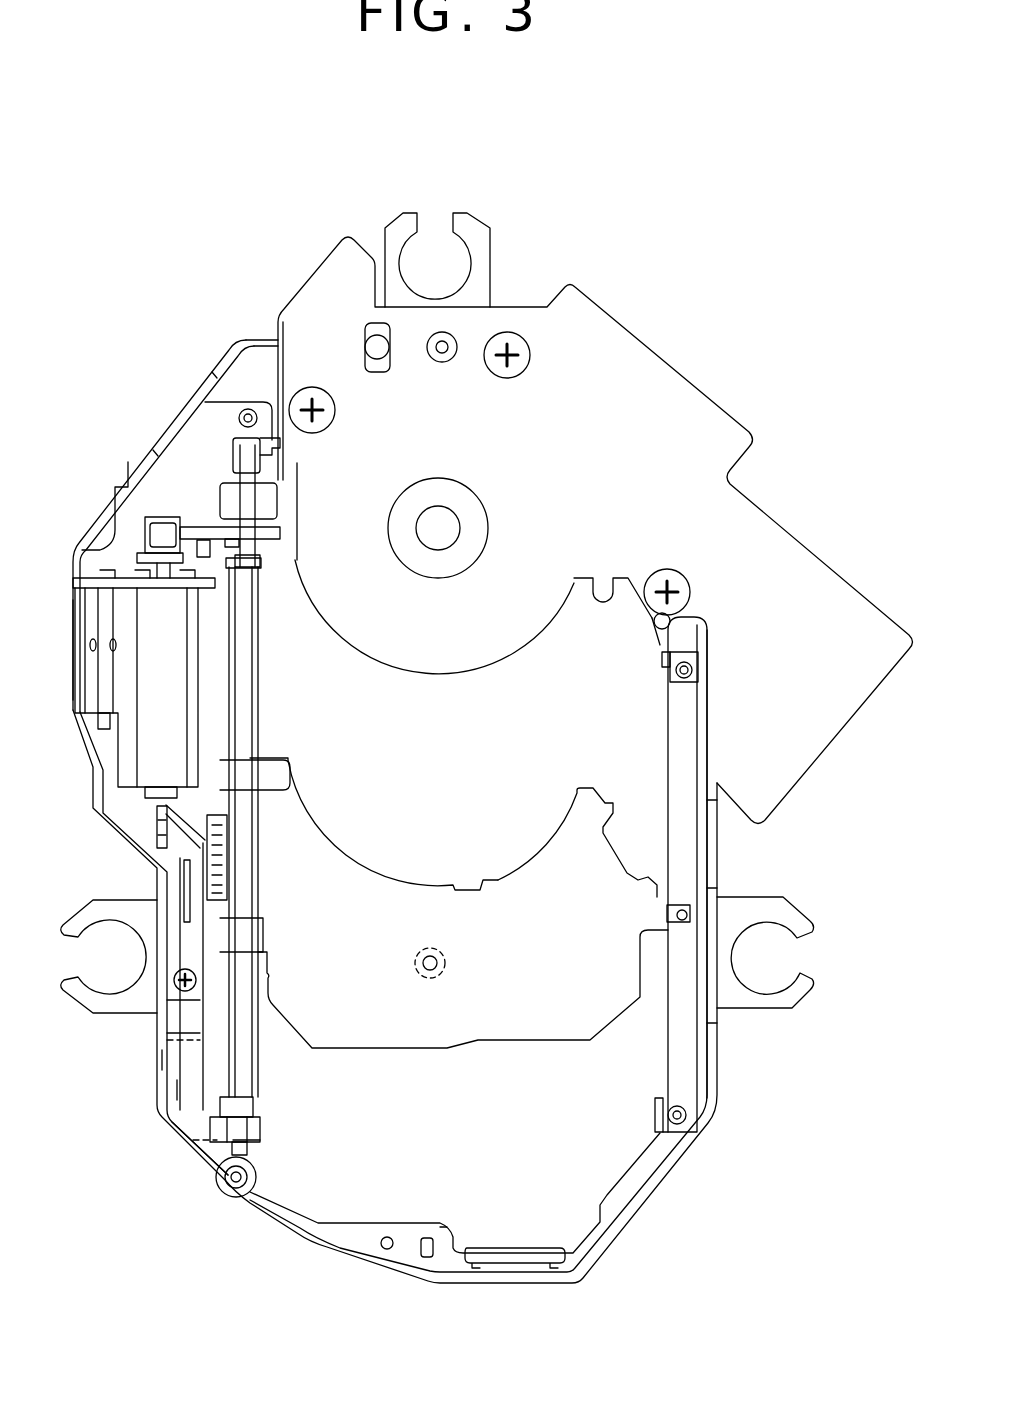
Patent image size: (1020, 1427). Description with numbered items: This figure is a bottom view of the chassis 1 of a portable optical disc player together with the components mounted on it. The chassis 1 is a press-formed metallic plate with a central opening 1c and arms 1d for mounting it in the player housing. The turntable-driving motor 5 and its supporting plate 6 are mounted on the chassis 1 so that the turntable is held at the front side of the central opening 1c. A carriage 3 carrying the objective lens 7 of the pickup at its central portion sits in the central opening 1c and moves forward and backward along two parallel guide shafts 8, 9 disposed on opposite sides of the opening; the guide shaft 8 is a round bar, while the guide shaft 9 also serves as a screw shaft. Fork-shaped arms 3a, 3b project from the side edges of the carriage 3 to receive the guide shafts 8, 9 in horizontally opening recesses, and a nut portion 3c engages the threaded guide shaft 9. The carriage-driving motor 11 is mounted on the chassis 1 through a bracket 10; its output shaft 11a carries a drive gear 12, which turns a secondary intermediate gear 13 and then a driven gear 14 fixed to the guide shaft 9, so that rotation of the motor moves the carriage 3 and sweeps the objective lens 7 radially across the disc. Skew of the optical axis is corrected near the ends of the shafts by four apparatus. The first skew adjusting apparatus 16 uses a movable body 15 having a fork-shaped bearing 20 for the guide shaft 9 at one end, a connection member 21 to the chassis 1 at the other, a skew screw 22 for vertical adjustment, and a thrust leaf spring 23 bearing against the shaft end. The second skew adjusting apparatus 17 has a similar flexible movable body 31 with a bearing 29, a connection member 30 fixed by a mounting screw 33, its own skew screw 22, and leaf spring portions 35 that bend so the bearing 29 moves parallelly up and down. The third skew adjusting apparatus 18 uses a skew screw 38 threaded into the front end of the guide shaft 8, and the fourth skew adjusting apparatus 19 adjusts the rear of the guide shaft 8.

The chassis 1 is at (615, 1215).
The central opening 1c is at (352, 1225).
The arms 1d is at (486, 258).
The carriage 3 is at (338, 843).
The fork-shaped arm 3a is at (690, 915).
The fork-shaped arm 3b is at (118, 780).
The nut portion 3c is at (207, 845).
The turntable-driving motor 5 is at (458, 553).
The supporting plate 6 is at (470, 675).
The objective lens 7 is at (425, 976).
The guide shaft 8 is at (668, 718).
The guide shaft 9 is at (260, 683).
The bracket 10 is at (207, 583).
The carriage-driving motor 11 is at (182, 722).
The output shaft 11a is at (165, 582).
The drive gear 12 is at (160, 537).
The intermediate gear 13 is at (200, 527).
The driven gear 14 is at (280, 530).
The movable body 15 is at (203, 420).
The first skew adjusting apparatus 16 is at (158, 398).
The second skew adjusting apparatus 17 is at (150, 1158).
The third skew adjusting apparatus 18 is at (652, 660).
The fourth skew adjusting apparatus 19 is at (645, 1118).
The bearing 20 is at (262, 470).
The connection member 21 is at (103, 547).
The skew screw 22 is at (248, 408).
The thrust leaf spring 23 is at (282, 440).
The bearing 29 is at (255, 1150).
The connection member 30 is at (180, 1003).
The movable body 31 is at (163, 1060).
The mounting screw 33 is at (195, 985).
The leaf spring portions 35 is at (178, 1097).
The skew screw 38 is at (692, 670).